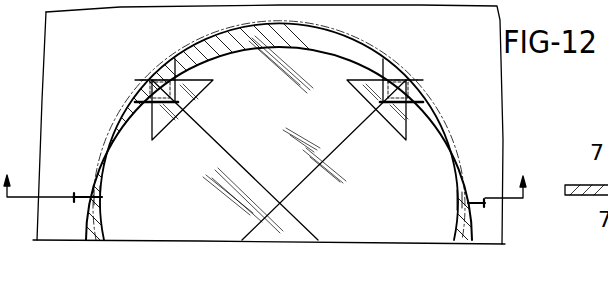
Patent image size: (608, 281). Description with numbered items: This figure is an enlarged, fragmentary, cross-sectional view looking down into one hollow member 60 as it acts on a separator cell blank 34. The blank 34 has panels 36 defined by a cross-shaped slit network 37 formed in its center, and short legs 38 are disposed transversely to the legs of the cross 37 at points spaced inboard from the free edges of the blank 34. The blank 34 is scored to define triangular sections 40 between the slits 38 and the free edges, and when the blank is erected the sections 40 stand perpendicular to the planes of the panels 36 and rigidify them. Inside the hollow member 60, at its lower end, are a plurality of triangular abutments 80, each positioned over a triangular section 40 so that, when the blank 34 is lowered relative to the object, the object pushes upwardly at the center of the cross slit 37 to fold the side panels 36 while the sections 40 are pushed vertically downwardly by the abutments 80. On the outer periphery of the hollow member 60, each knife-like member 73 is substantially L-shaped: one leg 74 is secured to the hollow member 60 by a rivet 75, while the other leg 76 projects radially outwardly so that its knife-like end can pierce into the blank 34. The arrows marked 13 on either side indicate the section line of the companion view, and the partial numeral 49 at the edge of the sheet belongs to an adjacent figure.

The section line 13- 13 is at (270, 172).
The separator cell blank 34 is at (495, 125).
The panels 36 is at (200, 205).
The cross-shaped slit network 37 is at (290, 187).
The short legs 38 is at (177, 120).
The triangular sections 40 is at (183, 80).
The member 49 is at (10, 14).
The hollow member 60 is at (383, 45).
The knife-like member 73 is at (78, 196).
The leg 74 is at (100, 198).
The rivet 75 is at (100, 183).
The leg 76 is at (80, 204).
The triangular abutment 80 is at (183, 96).